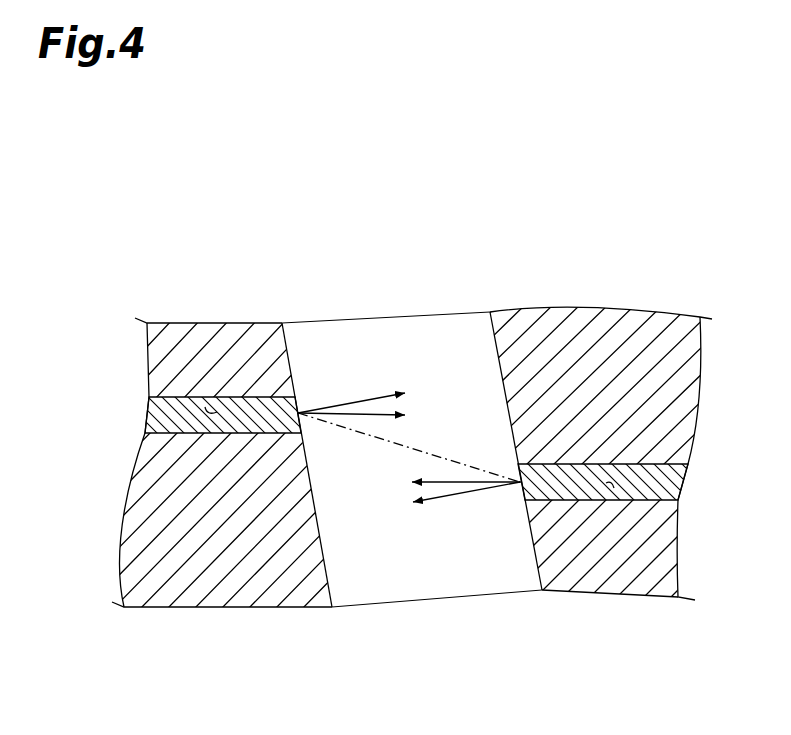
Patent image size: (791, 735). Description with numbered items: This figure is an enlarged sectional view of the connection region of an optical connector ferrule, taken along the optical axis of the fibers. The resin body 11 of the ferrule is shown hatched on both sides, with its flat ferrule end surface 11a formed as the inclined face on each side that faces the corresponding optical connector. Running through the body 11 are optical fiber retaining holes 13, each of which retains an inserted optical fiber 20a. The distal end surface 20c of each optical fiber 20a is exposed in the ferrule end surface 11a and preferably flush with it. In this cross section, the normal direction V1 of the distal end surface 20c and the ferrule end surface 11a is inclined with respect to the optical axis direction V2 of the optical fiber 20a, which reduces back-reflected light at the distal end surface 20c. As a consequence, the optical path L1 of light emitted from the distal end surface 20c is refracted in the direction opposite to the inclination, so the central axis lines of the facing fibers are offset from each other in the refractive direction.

The body 11 is at (657, 311).
The ferrule end surface 11a is at (489, 336).
The optical fiber retaining holes 13 is at (205, 407).
The optical fiber 20a is at (154, 420).
The distal end surface 20c is at (300, 409).
The normal direction V1 is at (386, 395).
The optical axis direction V2 is at (355, 418).
The optical path L1 is at (437, 456).